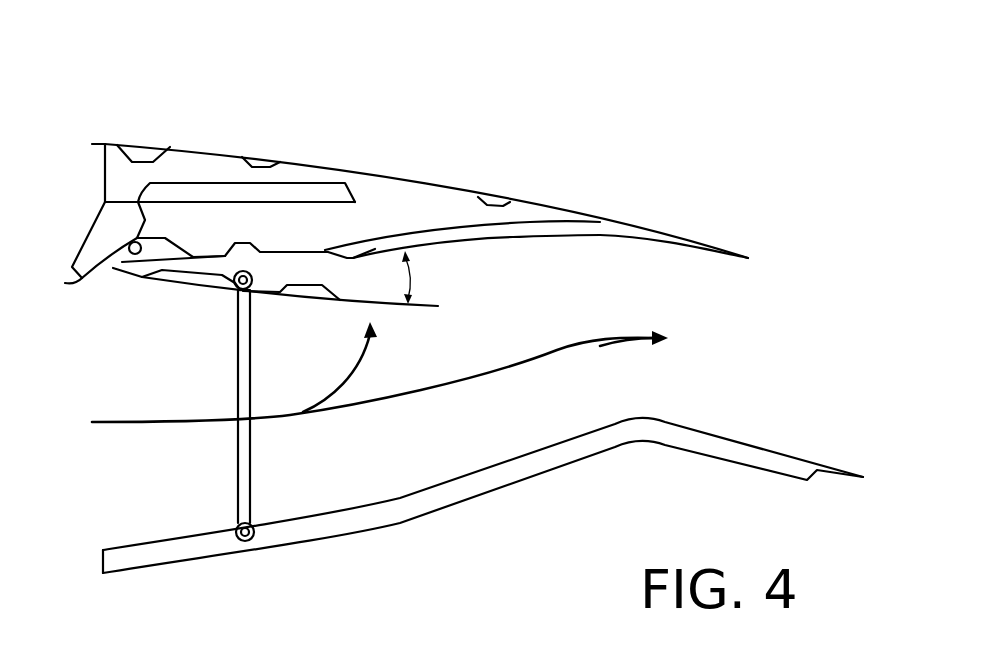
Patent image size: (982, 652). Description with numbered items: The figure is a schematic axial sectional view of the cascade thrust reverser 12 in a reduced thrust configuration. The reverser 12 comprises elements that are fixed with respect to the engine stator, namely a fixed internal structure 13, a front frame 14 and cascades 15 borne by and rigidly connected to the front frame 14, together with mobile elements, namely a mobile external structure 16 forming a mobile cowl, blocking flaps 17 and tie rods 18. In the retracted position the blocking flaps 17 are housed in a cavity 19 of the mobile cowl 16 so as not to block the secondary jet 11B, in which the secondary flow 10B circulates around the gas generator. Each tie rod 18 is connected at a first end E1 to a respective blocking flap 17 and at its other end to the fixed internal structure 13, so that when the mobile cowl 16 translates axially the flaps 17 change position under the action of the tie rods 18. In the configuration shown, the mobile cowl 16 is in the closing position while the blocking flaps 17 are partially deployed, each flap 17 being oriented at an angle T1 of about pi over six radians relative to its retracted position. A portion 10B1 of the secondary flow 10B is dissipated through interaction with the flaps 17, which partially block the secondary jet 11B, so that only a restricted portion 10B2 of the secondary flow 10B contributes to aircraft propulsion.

The cascade thrust reverser 12 is at (361, 98).
The fixed internal structure 13 is at (497, 492).
The front frame 14 is at (97, 143).
The cascades 15 is at (223, 190).
The mobile external structure 16 is at (557, 207).
The blocking flaps 17 is at (172, 284).
The tie rods 18 is at (248, 477).
The cavity 19 is at (307, 253).
The first end E1 is at (219, 300).
The angle T1 is at (412, 274).
The secondary flow 10B is at (168, 423).
The portion of the secondary flow 10B1 is at (372, 367).
The restricted portion of the secondary flow 10B2 is at (610, 337).
The secondary jet 11B is at (447, 437).